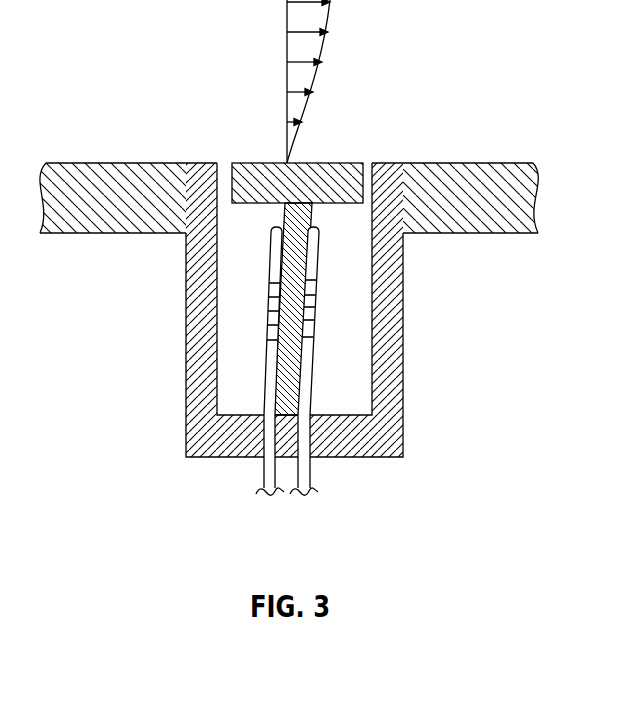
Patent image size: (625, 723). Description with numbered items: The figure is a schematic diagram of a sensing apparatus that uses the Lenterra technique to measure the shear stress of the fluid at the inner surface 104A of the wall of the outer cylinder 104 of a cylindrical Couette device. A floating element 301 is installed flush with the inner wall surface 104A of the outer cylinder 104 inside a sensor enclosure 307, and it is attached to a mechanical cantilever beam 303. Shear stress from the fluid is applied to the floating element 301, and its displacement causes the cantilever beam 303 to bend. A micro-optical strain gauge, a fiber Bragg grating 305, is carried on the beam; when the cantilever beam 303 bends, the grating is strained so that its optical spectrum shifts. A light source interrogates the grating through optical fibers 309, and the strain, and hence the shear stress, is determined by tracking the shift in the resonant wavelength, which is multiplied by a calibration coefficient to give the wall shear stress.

The inner surface 104A is at (108, 165).
The outer cylinder 104 is at (493, 178).
The floating element 301 is at (262, 175).
The cantilever beam 303 is at (298, 372).
The micro-optical strain gauge 305 is at (300, 326).
The sensor enclosure 307 is at (383, 445).
The optical fibers 309 is at (303, 491).